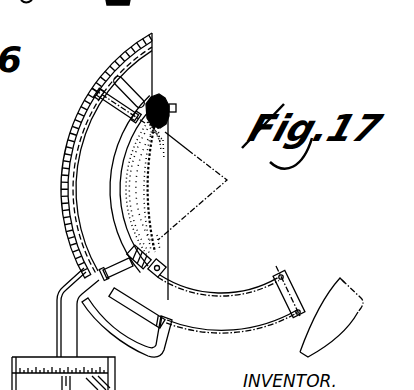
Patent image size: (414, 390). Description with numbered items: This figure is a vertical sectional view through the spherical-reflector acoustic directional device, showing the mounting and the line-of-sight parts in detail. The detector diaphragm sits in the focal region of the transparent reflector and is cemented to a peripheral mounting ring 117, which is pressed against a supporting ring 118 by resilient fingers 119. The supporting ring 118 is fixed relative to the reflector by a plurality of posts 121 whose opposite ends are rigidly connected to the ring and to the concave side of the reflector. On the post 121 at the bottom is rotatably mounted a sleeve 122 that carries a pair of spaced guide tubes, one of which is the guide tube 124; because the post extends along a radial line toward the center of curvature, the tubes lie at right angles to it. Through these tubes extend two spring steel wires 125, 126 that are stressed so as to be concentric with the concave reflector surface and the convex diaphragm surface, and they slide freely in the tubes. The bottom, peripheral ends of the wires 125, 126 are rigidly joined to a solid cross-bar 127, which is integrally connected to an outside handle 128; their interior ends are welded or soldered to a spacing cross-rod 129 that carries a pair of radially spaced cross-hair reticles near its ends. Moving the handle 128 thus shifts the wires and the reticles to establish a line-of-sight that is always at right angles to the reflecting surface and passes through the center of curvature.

The peripheral mounting ring 117 is at (168, 134).
The supporting ring 118 is at (158, 96).
The resilient fingers 119 is at (176, 107).
The posts 121 is at (135, 88).
The sleeve 122 is at (130, 256).
The guide tube 124 is at (88, 270).
The spring steel wire 125 is at (112, 192).
The spring steel wire 126 is at (66, 170).
The solid cross-bar 127 is at (166, 284).
The outside handle 128 is at (160, 350).
The spacing cross-rod 129 is at (106, 110).